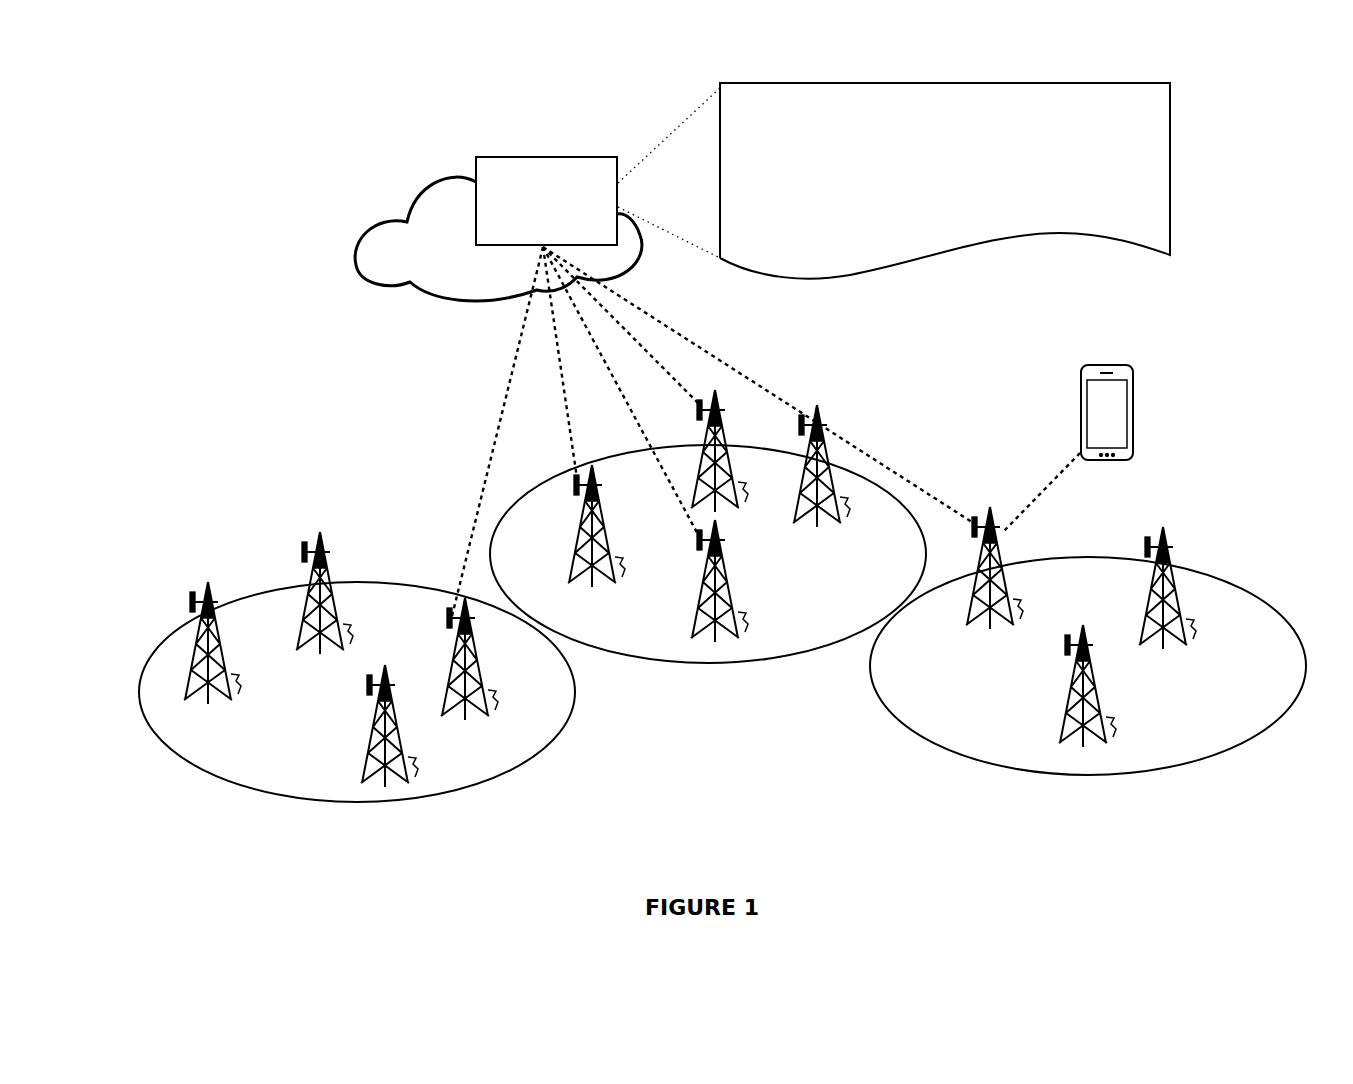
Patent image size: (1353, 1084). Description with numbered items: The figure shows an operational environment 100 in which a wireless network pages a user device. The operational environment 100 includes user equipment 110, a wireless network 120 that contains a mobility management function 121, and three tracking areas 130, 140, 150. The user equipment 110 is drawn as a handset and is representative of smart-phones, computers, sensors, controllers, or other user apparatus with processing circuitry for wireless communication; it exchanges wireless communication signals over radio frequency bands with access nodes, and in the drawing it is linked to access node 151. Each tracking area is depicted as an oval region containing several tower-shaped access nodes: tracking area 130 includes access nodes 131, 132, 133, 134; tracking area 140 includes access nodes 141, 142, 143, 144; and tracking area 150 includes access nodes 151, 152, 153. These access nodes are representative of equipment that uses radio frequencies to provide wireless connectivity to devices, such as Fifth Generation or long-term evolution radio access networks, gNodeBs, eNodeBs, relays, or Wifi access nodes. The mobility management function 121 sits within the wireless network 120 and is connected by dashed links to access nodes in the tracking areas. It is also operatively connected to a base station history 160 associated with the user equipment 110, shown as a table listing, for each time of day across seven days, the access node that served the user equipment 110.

The operational environment 100 is at (128, 171).
The user equipment 110 is at (1092, 440).
The wireless network 120 is at (436, 276).
The mobility management function 121 is at (570, 240).
The tracking area 130 is at (265, 771).
The access node 131 is at (225, 649).
The access node 132 is at (338, 599).
The access node 133 is at (482, 662).
The access node 134 is at (407, 726).
The tracking area 140 is at (617, 649).
The access node 141 is at (608, 533).
The access node 142 is at (733, 587).
The access node 143 is at (731, 457).
The access node 144 is at (835, 474).
The tracking area 150 is at (972, 747).
The access node 151 is at (1007, 574).
The access node 152 is at (1104, 690).
The access node 153 is at (1180, 595).
The base station history 160 is at (833, 264).